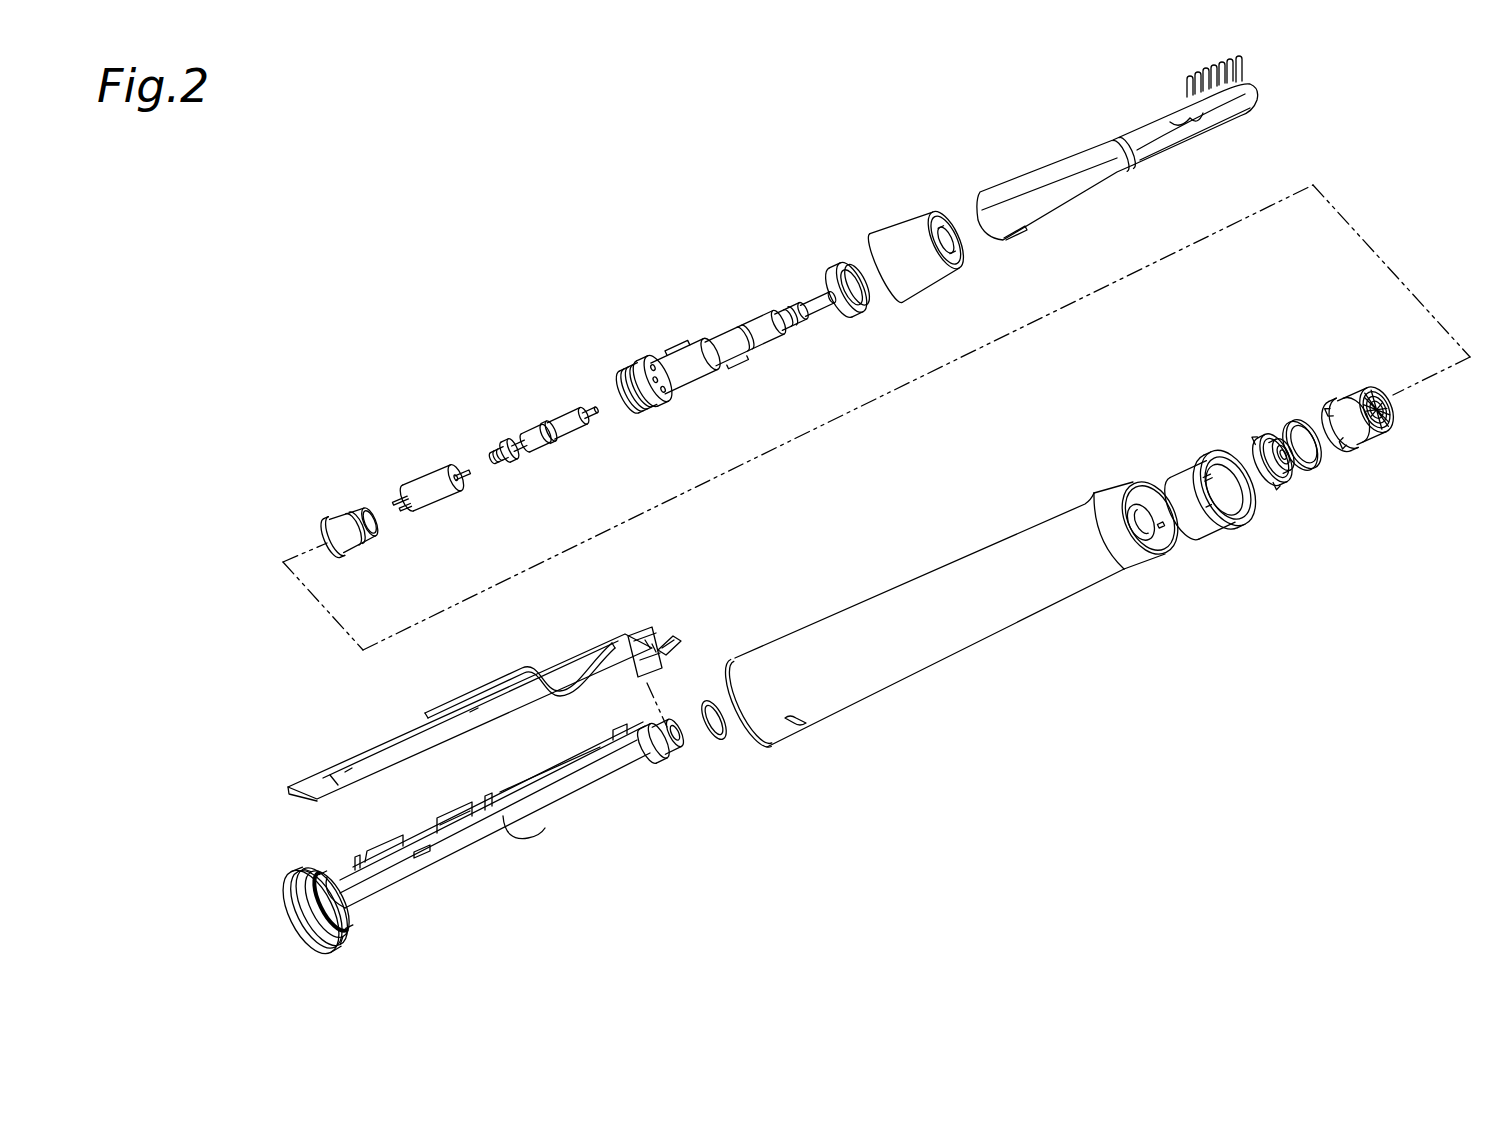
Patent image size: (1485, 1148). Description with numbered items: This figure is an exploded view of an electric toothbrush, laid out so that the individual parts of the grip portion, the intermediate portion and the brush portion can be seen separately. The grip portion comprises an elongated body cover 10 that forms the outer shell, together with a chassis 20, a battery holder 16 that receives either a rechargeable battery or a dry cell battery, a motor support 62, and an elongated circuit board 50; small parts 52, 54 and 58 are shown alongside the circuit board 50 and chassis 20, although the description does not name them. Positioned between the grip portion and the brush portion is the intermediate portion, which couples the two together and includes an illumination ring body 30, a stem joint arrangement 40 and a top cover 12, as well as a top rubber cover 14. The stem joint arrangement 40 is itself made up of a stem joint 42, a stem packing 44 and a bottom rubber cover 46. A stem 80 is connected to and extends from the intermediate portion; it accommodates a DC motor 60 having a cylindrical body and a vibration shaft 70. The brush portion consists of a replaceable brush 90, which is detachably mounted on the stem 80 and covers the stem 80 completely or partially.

The elongated body cover 10 is at (948, 672).
The top cover 12 is at (915, 232).
The top rubber cover 14 is at (841, 272).
The battery holder 16 is at (410, 888).
The chassis 20 is at (568, 836).
The illumination ring body 30 is at (1218, 540).
The stem joint arrangement 40 is at (1370, 377).
The stem joint 42 is at (1370, 434).
The stem packing 44 is at (1315, 464).
The bottom rubber cover 46 is at (1281, 482).
The elongated circuit board 50 is at (421, 724).
The spring contact 52 is at (545, 673).
The switch bracket 54 is at (640, 634).
The switch element 58 is at (676, 650).
The DC motor 60 is at (430, 475).
The motor support 62 is at (341, 518).
The vibration shaft 70 is at (540, 427).
The stem 80 is at (726, 330).
The replaceable brush 90 is at (1047, 176).